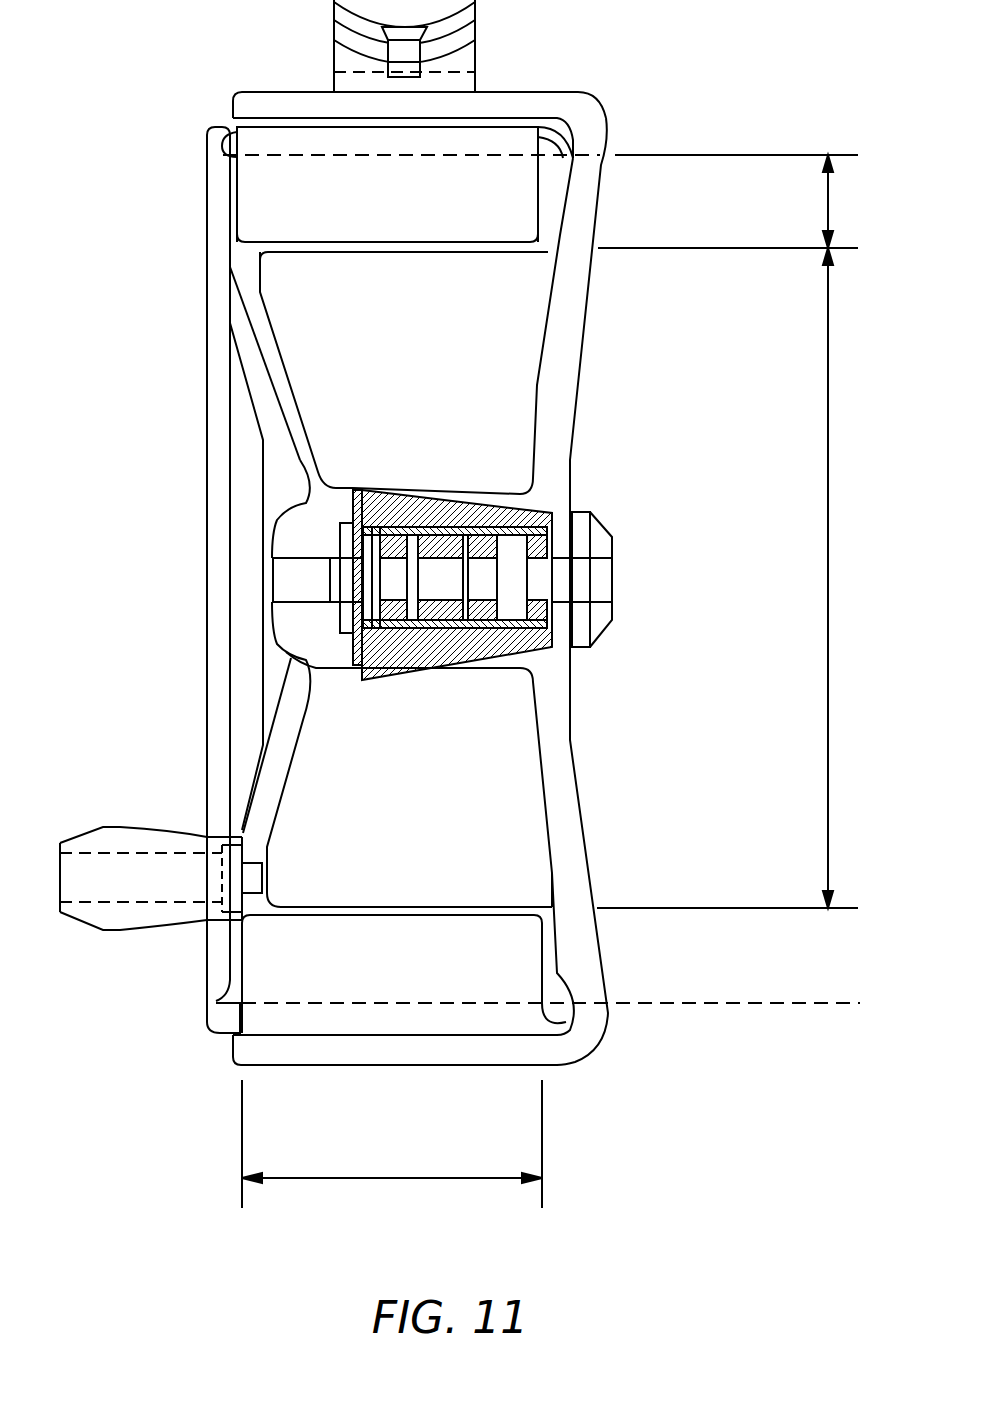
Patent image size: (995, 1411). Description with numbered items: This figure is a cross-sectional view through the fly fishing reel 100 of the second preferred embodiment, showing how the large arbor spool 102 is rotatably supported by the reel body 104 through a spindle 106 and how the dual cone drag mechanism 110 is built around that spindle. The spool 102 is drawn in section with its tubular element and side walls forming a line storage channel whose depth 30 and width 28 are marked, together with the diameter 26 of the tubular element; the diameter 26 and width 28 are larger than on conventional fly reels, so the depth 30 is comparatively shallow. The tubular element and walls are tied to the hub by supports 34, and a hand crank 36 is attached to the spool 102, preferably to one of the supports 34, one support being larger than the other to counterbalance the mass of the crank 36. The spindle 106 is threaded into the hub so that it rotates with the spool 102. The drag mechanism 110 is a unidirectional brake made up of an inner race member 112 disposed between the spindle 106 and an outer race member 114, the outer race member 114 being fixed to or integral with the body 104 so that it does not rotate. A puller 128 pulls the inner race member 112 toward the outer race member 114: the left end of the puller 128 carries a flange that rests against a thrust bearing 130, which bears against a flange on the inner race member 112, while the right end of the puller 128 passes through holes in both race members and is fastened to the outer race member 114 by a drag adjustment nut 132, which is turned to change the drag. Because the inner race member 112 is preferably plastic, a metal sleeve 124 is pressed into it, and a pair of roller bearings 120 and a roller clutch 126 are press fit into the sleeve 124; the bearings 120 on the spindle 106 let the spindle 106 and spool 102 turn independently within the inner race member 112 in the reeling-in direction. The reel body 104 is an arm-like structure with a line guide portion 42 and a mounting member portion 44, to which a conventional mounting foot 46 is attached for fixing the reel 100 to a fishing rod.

The fly fishing reel 100 is at (708, 94).
The large arbor spool 102 is at (198, 166).
The reel body 104 is at (583, 842).
The drag mechanism 110 is at (500, 393).
The supports 34 is at (275, 363).
The hand crank 36 is at (103, 932).
The line guide portion 42 is at (335, 1067).
The mounting member portion 44 is at (257, 92).
The mounting foot 46 is at (475, 20).
The spindle 106 is at (290, 592).
The inner race member 112 is at (375, 658).
The outer race member 114 is at (372, 473).
The roller bearings 120 is at (446, 645).
The sleeve 124 is at (447, 525).
The roller clutch 126 is at (485, 525).
The puller 128 is at (495, 648).
The thrust bearing 130 is at (543, 512).
The drag adjustment nut 132 is at (600, 637).
The diameter 26 is at (828, 580).
The width 28 is at (375, 1180).
The depth 30 is at (828, 200).